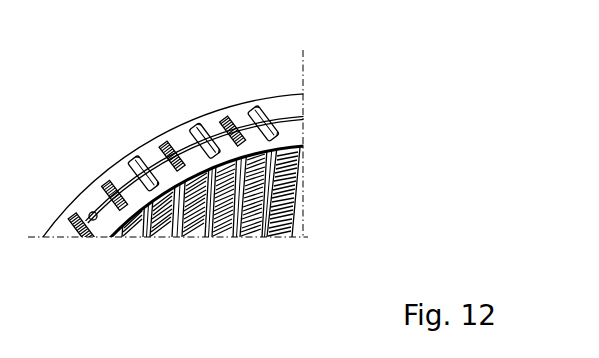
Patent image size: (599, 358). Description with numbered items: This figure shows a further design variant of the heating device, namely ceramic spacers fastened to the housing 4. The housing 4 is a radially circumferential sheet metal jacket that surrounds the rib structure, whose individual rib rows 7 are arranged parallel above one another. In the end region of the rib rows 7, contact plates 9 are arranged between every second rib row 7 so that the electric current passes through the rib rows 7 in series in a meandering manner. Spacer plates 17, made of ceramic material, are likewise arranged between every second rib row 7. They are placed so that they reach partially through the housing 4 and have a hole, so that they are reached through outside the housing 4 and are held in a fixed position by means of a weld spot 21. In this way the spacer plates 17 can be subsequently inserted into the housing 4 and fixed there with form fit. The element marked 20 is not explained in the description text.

The housing 4 is at (152, 140).
The rib rows 7 is at (274, 231).
The contact plates 9 is at (193, 156).
The spacer plates 17 is at (136, 158).
The support ring 20 is at (128, 188).
The weld spot 21 is at (92, 222).